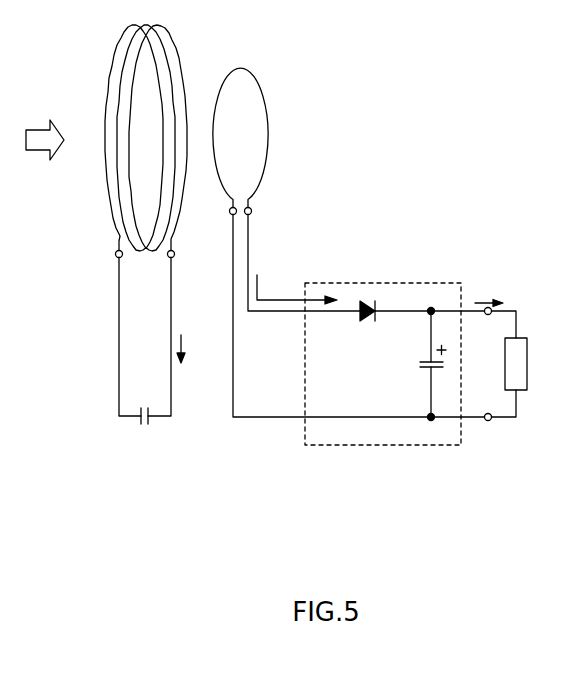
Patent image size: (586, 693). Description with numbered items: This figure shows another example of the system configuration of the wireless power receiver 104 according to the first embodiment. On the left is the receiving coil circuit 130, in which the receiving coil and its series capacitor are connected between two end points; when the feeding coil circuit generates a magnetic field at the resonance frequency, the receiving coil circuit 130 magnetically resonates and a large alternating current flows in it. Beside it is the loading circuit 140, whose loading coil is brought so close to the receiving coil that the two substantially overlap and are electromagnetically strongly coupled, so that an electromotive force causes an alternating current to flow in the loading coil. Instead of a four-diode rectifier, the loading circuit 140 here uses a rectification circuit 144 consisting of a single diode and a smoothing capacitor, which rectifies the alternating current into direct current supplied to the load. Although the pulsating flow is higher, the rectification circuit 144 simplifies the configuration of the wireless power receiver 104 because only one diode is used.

The wireless power receiver 104 is at (340, 561).
The receiving coil circuit 130 is at (110, 452).
The loading circuit 140 is at (222, 453).
The rectification circuit 144 is at (383, 282).